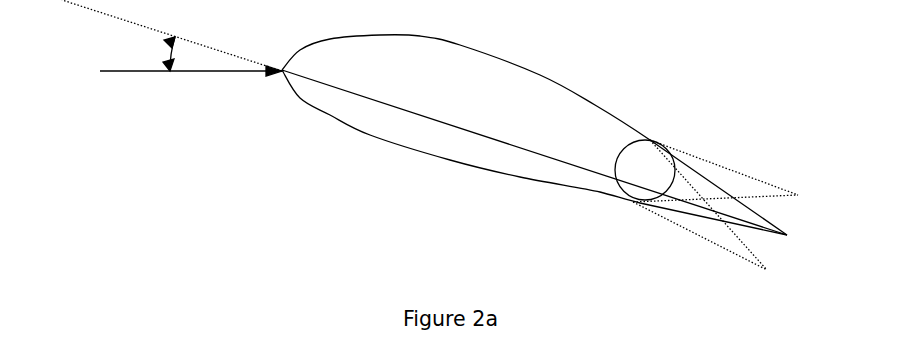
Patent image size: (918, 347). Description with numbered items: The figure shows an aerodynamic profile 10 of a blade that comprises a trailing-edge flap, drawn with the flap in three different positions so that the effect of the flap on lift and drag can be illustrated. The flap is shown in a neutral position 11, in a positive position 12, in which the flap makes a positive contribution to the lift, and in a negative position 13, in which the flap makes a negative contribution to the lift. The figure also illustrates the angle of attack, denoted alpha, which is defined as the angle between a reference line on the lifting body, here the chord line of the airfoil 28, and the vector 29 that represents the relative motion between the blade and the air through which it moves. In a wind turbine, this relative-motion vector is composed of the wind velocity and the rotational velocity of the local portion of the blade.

The profile 10 is at (557, 83).
The neutral position 11 is at (750, 218).
The positive position 12 is at (715, 237).
The negative position 13 is at (742, 175).
The chord line of the airfoil 28 is at (457, 130).
The vector representing relative motion 29 is at (217, 72).